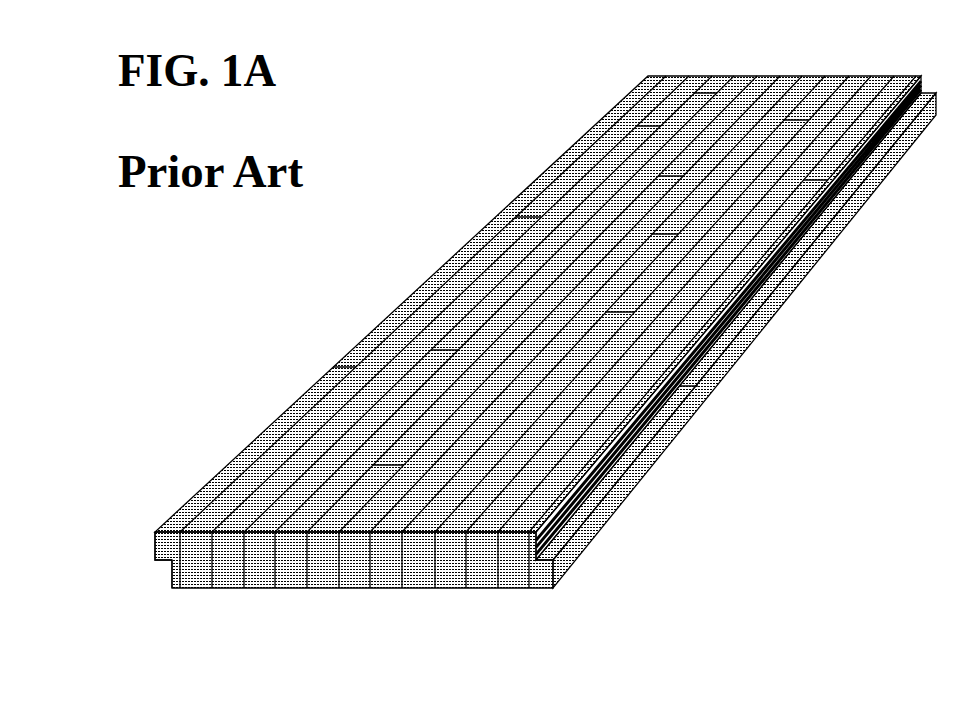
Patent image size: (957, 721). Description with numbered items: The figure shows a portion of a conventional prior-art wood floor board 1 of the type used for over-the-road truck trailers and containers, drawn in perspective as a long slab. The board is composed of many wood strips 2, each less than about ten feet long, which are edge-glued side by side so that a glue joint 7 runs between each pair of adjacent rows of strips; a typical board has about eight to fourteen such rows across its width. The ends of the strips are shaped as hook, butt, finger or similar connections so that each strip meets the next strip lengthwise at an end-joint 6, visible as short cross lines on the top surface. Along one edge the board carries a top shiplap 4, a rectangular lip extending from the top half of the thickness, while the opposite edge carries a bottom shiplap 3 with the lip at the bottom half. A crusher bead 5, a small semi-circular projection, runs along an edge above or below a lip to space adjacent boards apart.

The wood floor board 1 is at (506, 352).
The wood strips 2 is at (250, 550).
The bottom shiplap 3 is at (557, 553).
The top shiplap 4 is at (147, 538).
The crusher bead 5 is at (163, 565).
The end-joint 6 is at (340, 358).
The glue joint 7 is at (490, 562).